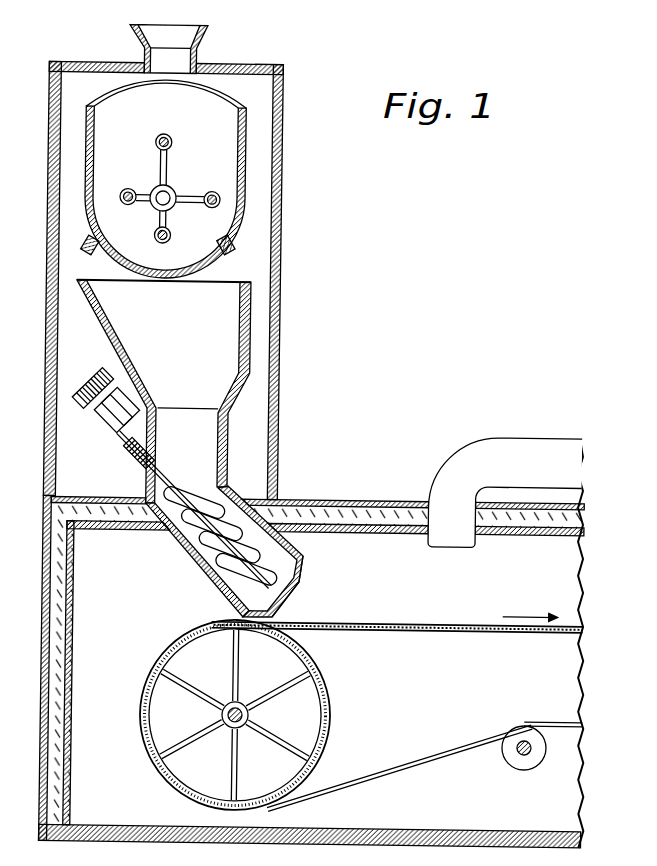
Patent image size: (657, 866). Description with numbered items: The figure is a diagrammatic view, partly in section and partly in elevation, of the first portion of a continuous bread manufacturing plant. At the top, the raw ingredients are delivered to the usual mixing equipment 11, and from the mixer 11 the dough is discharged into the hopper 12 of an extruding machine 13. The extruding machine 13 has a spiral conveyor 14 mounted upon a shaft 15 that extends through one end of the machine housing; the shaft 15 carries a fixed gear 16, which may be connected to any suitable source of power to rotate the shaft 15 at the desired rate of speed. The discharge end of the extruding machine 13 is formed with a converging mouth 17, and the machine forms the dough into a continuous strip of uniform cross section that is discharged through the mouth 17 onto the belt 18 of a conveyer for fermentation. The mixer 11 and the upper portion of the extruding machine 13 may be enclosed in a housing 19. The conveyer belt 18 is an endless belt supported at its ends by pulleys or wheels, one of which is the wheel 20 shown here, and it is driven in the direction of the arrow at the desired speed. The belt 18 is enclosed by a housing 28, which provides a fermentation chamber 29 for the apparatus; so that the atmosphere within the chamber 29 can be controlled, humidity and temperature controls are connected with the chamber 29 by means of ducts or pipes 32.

The mixing equipment 11 is at (242, 190).
The hopper 12 is at (162, 392).
The extruding machine 13 is at (229, 490).
The spiral conveyor 14 is at (280, 498).
The shaft 15 is at (125, 436).
The gear 16 is at (87, 398).
The converging mouth 17 is at (284, 587).
The belt 18 is at (411, 619).
The housing 19 is at (278, 240).
The pulley or wheel 20 is at (333, 690).
The housing 28 is at (396, 514).
The fermentation chamber 29 is at (458, 584).
The ducts or pipes 32 is at (505, 493).